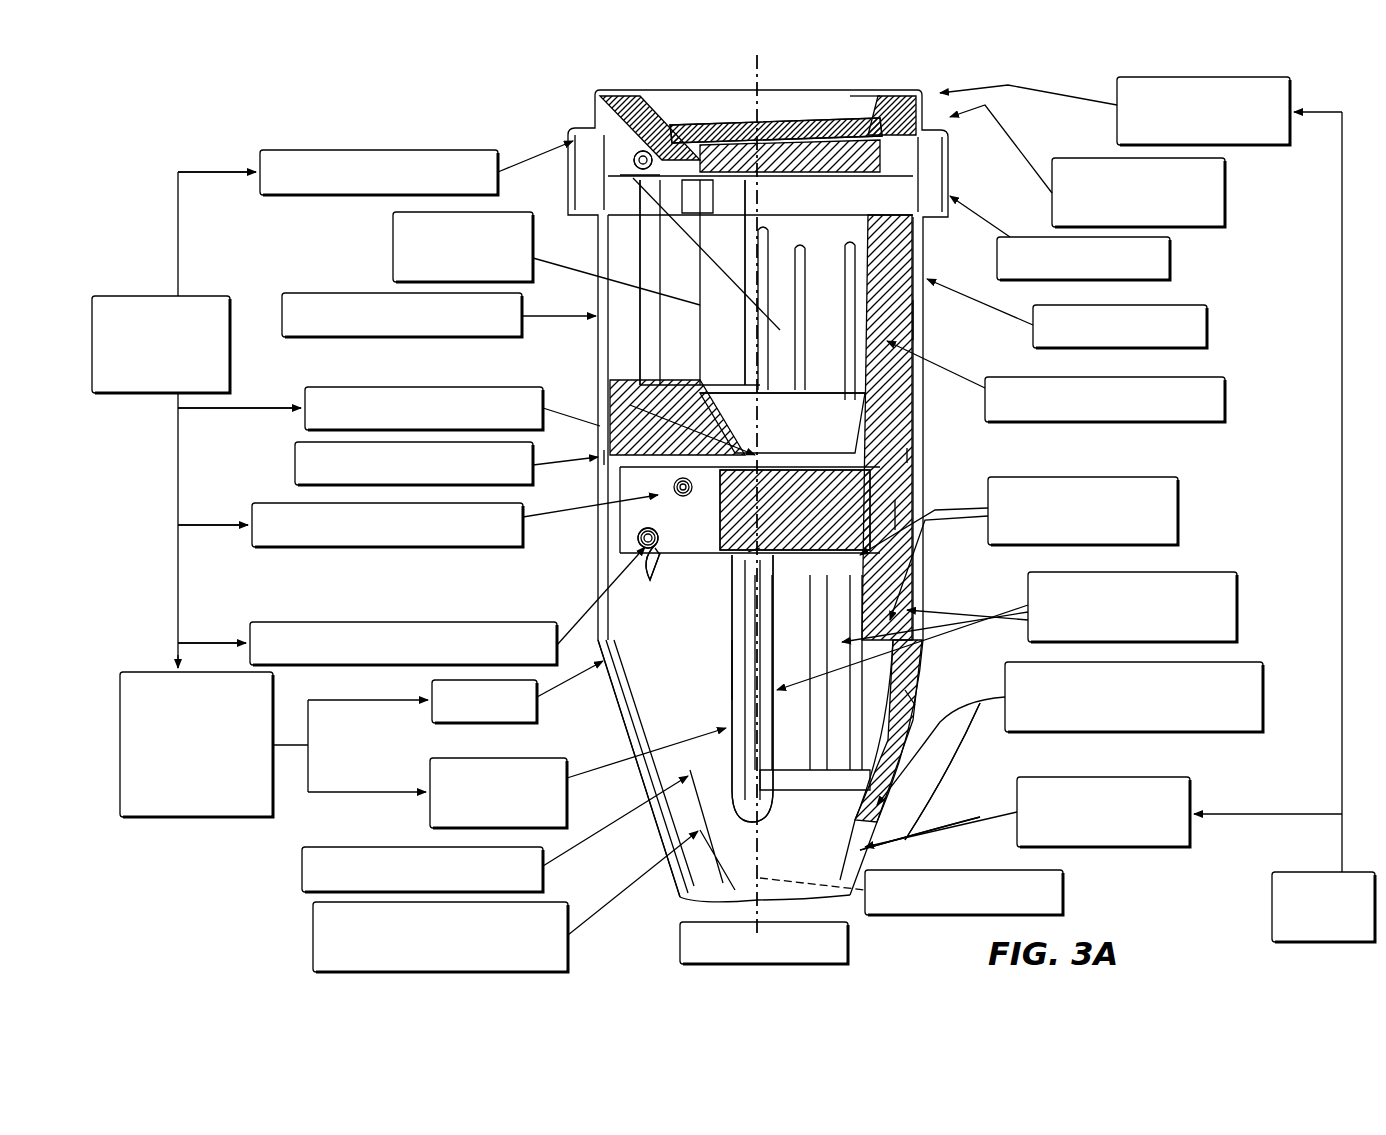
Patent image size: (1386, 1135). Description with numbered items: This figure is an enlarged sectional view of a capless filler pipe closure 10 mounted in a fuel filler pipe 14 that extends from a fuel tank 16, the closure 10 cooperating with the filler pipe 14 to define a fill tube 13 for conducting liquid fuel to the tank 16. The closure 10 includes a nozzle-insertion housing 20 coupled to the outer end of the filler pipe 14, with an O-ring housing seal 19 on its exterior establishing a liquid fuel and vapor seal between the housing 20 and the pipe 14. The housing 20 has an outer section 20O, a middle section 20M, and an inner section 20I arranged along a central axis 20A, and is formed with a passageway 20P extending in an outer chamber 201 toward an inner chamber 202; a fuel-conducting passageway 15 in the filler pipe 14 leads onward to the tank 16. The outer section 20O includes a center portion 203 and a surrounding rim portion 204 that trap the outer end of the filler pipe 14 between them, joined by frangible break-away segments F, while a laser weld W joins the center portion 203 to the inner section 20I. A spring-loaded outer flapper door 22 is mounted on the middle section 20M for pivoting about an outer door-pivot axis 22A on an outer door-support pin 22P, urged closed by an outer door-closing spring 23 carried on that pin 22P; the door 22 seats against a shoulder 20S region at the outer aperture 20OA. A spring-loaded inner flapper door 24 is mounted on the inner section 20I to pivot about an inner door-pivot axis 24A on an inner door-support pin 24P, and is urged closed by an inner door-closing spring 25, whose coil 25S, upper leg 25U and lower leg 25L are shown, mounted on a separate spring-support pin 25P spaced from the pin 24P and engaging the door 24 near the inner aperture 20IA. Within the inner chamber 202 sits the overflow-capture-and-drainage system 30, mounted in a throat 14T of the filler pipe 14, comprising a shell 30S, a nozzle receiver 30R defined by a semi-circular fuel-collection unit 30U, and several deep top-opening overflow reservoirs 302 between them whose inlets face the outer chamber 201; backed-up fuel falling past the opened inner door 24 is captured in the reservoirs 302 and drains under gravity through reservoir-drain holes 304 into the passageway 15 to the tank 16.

The capless filler pipe closure 10 is at (1117, 100).
The fill tube 13 is at (1272, 905).
The fuel filler pipe 14 is at (1190, 790).
The throat 14T is at (908, 700).
The fuel-conducting passageway 15 is at (313, 938).
The fuel tank 16 is at (848, 943).
The O-ring housing seal 19 is at (295, 463).
The nozzle-insertion housing 20 is at (200, 296).
The central axis 20A is at (1063, 893).
The inner section 20I is at (305, 418).
The inner section aperture 20IA is at (895, 505).
The middle section 20M is at (335, 293).
The outer section 20O is at (283, 150).
The outer section aperture 20OA is at (862, 125).
The passageway 20P is at (920, 318).
The shoulder 20S is at (742, 455).
The outer flapper door 22 is at (758, 106).
The outer door-pivot axis 22A is at (646, 108).
The outer door-support pin 22P is at (642, 206).
The outer door-closing spring 23 is at (618, 186).
The inner flapper door 24 is at (789, 458).
The inner door-pivot axis 24A is at (630, 405).
The inner door-support pin 24P is at (252, 540).
The inner door-closing spring 25 is at (613, 578).
The spring lower leg 25L is at (748, 552).
The spring-support pin 25P is at (275, 622).
The spring coil 25S is at (626, 537).
The spring upper leg 25U is at (655, 548).
The overflow-capture-and-drainage system 30 is at (152, 672).
The nozzle receiver 30R is at (430, 815).
The shell 30S is at (432, 712).
The semi-circular fuel-collection unit 30U is at (733, 663).
The outer chamber 201 is at (1225, 400).
The inner chamber 202 is at (302, 868).
The center portion 203 is at (393, 236).
The rim portion 204 is at (1170, 256).
The overflow reservoirs 302 is at (1178, 515).
The reservoir-drain holes 304 is at (1263, 700).
The frangible break-away segments F is at (1225, 205).
The laser weld W is at (1207, 328).